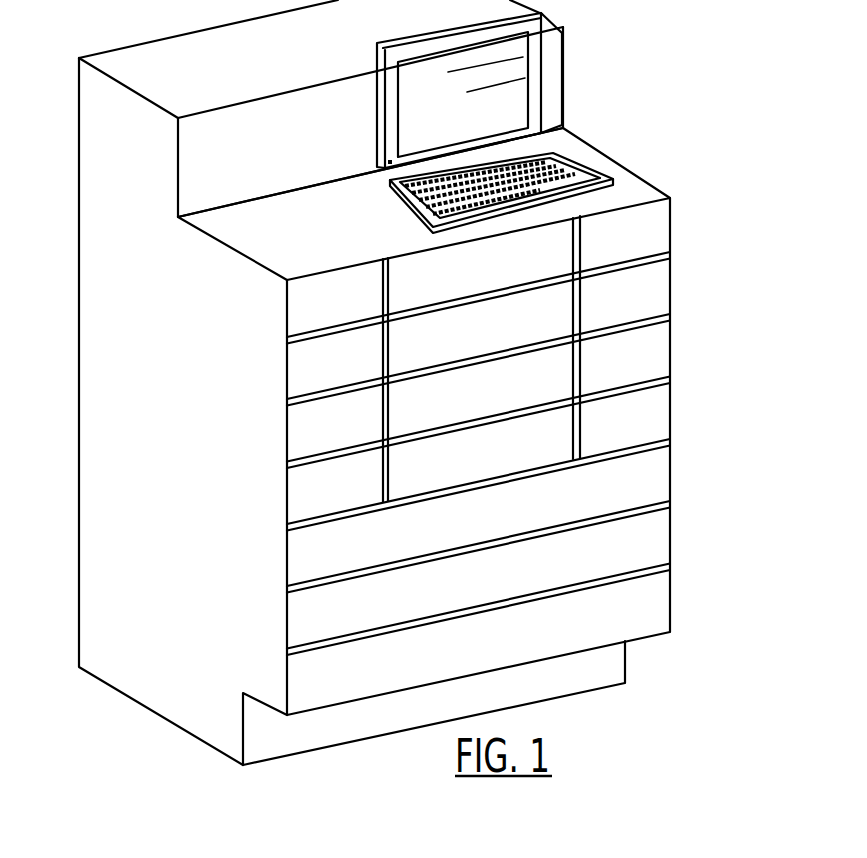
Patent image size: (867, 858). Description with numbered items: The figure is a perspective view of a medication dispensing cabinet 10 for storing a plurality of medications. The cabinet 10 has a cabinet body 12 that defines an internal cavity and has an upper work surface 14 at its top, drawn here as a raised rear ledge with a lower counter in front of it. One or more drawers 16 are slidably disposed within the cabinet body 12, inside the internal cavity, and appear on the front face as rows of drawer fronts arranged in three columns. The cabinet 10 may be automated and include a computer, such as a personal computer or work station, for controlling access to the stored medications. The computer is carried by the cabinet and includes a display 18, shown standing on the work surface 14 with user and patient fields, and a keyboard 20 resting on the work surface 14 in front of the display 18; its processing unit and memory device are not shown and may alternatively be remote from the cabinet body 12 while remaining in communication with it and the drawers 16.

The cabinet 10 is at (381, 382).
The cabinet body 12 is at (102, 512).
The upper work surface 14 is at (230, 233).
The drawers 16 is at (637, 417).
The display 18 is at (537, 85).
The keyboard 20 is at (600, 182).